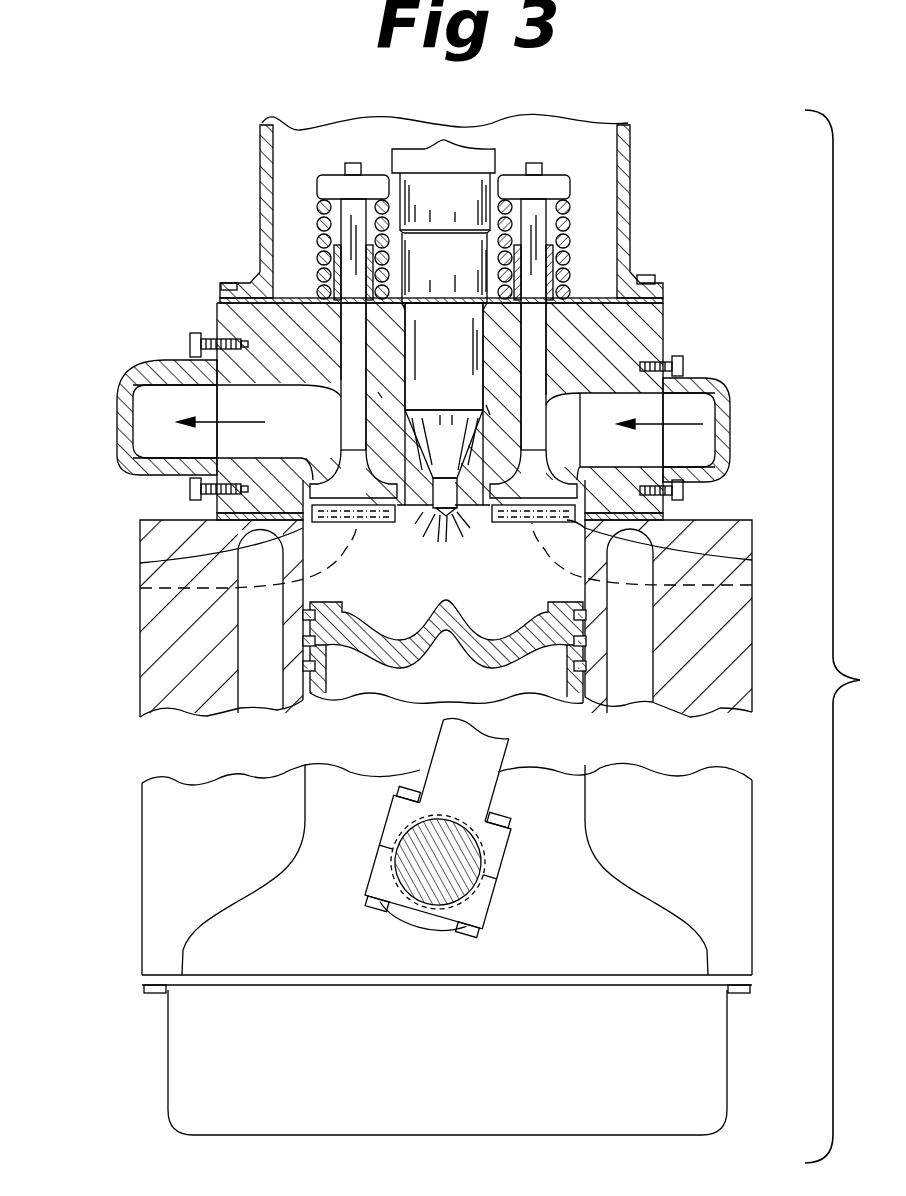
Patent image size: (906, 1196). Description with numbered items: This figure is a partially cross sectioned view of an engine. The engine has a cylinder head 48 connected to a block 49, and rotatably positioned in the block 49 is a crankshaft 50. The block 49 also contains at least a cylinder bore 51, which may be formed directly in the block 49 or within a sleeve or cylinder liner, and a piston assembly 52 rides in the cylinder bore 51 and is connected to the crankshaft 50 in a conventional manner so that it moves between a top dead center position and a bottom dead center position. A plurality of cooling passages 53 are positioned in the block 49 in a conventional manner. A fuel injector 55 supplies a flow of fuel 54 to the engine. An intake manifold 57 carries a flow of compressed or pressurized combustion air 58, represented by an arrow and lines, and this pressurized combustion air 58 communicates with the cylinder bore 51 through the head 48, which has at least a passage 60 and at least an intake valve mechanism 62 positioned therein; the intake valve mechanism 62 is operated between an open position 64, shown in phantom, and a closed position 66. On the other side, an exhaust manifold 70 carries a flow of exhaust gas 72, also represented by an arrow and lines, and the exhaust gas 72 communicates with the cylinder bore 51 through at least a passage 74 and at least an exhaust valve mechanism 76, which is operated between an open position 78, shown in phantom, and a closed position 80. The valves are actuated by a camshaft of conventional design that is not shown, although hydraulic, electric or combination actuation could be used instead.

The cylinder head 48 is at (309, 351).
The block 49 is at (212, 639).
The crankshaft 50 is at (475, 822).
The cylinder bore 51 is at (558, 628).
The piston assembly 52 is at (376, 662).
The cooling passages 53 is at (271, 628).
The flow of fuel 54 is at (447, 528).
The fuel injector 55 is at (417, 170).
The intake manifold 57 is at (730, 393).
The flow of pressurized combustion air 58 is at (703, 424).
The passage 60 is at (640, 458).
The intake valve mechanism 62 is at (490, 412).
The open position 64 is at (752, 585).
The closed position 66 is at (752, 558).
The exhaust manifold 70 is at (117, 390).
The flow of exhaust gas 72 is at (210, 422).
The passage 74 is at (276, 451).
The exhaust valve mechanism 76 is at (380, 395).
The open position 78 is at (140, 588).
The closed position 80 is at (140, 563).